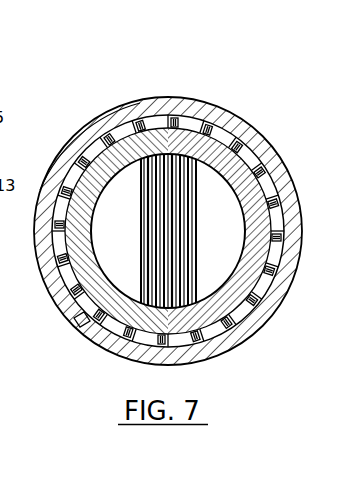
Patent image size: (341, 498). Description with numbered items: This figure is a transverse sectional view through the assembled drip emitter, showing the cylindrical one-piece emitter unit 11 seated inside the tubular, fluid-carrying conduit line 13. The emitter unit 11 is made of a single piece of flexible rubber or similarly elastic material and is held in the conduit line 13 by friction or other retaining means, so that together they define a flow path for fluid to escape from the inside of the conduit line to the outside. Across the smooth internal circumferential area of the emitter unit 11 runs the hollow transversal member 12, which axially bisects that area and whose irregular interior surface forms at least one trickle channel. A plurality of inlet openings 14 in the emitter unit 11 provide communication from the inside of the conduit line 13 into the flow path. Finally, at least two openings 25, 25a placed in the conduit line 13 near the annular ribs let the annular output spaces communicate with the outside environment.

The emitter unit 11 is at (269, 224).
The hollow transversal member 12 is at (144, 240).
The conduit line 13 is at (171, 96).
The inlet openings 14 is at (131, 160).
The opening 25 is at (270, 140).
The opening 25a is at (72, 330).